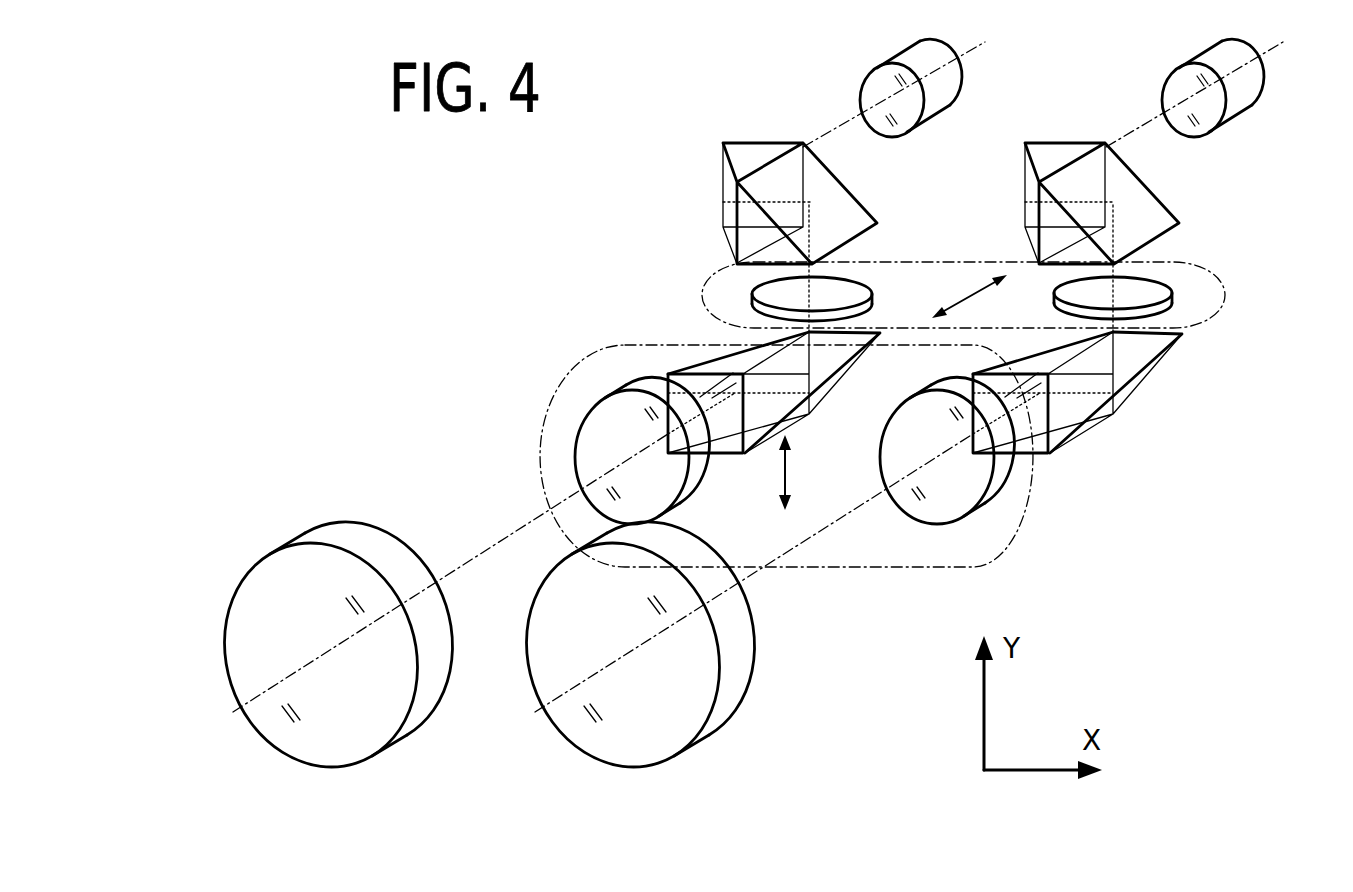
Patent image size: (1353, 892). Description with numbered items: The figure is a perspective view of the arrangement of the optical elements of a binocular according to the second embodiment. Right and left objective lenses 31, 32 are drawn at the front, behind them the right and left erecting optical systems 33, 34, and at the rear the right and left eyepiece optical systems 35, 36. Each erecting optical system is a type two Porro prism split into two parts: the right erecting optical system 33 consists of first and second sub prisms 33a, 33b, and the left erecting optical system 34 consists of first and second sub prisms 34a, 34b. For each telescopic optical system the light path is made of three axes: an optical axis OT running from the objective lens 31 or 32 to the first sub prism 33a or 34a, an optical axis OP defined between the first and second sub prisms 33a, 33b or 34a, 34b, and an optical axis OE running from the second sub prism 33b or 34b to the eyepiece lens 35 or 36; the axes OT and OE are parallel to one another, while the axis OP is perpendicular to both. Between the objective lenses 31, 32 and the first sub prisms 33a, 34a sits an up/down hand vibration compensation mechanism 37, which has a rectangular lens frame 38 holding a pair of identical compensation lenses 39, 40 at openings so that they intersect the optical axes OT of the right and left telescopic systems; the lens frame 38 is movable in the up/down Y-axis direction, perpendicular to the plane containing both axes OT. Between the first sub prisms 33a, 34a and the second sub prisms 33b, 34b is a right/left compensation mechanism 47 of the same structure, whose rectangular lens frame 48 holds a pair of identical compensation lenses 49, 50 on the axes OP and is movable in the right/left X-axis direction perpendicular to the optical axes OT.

The right objective lens 31 is at (283, 718).
The left objective lens 32 is at (585, 718).
The right erecting optical system 33 is at (623, 197).
The first sub prism 33a is at (678, 372).
The second sub prism 33b is at (724, 237).
The left erecting optical system 34 is at (1288, 220).
The first sub prism 34a is at (1167, 362).
The second sub prism 34b is at (1179, 228).
The right eyepiece optical system 35 is at (910, 62).
The left eyepiece optical system 36 is at (1212, 62).
The up/down hand vibration compensation mechanism 37 is at (565, 357).
The rectangular lens frame 38 is at (540, 428).
The compensation lens 39 is at (673, 480).
The compensation lens 40 is at (878, 457).
The right/left compensation mechanism 47 is at (969, 212).
The rectangular lens frame 48 is at (957, 260).
The compensation lens 49 is at (862, 282).
The compensation lens 50 is at (1057, 285).
The optical axis OE is at (850, 118).
The optical axis OP is at (1055, 318).
The optical axis OT is at (512, 530).